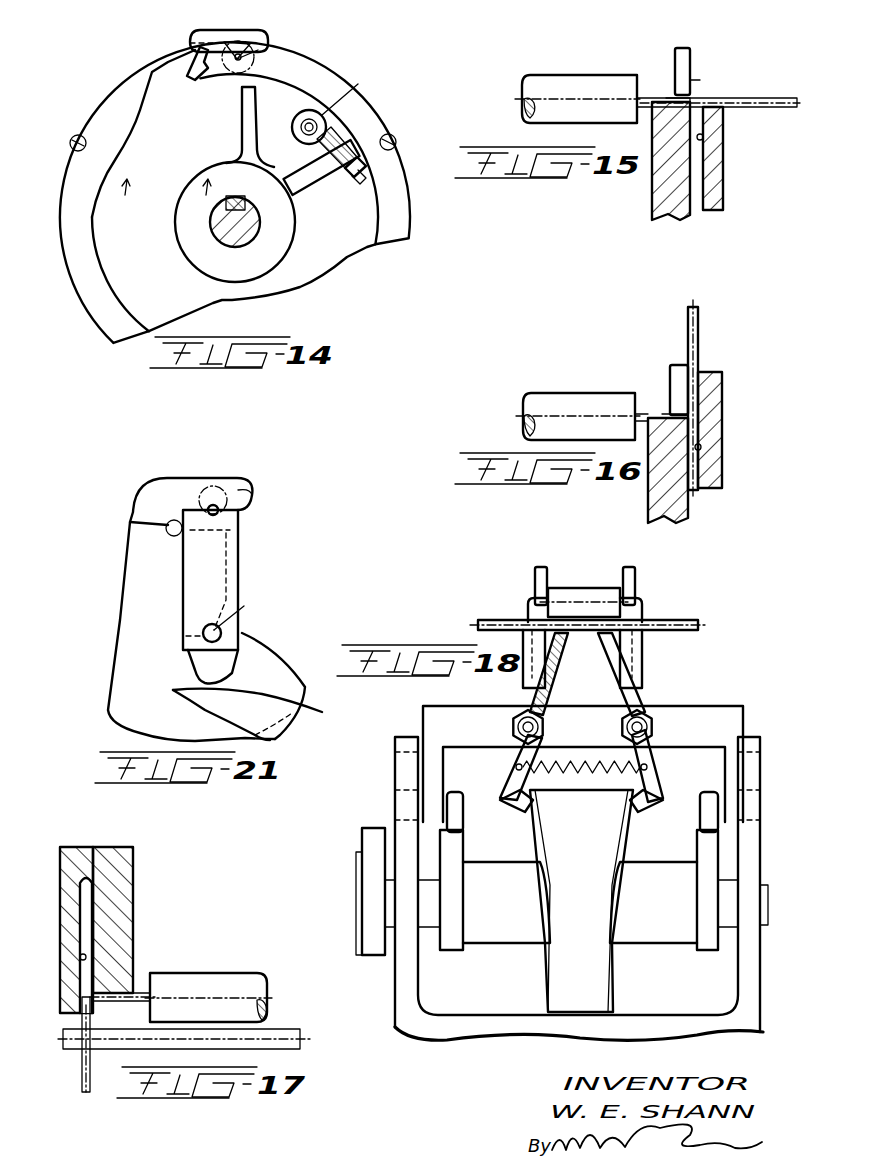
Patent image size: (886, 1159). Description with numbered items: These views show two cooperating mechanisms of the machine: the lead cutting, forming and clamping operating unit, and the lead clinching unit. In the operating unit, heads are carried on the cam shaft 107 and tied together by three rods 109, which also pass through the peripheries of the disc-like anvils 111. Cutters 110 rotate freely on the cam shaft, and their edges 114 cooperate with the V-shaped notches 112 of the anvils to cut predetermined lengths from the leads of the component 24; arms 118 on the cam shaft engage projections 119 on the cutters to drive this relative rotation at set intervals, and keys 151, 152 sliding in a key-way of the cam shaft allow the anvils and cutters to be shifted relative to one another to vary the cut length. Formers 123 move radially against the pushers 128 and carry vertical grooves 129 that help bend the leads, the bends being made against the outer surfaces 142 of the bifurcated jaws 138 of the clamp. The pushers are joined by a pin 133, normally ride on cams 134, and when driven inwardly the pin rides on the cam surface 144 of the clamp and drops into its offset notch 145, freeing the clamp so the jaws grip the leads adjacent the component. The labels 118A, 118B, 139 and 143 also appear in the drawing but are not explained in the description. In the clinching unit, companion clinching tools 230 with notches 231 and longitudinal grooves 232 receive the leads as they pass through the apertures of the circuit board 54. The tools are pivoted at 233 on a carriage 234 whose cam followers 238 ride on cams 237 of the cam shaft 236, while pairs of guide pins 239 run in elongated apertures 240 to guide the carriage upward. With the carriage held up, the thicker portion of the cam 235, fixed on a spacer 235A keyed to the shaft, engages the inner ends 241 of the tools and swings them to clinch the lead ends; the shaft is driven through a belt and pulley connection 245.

In FIG. 14, the component 24 is at (188, 40).
In FIG. 15, the component 24 is at (560, 82).
In FIG. 16, the component 24 is at (541, 400).
In FIG. 21, the component 24 is at (228, 500).
In FIG. 17, the component 24 is at (258, 984).
In FIG. 18, the component 24 is at (580, 590).
In FIG. 15, the circuit board 54 is at (718, 102).
In FIG. 17, the circuit board 54 is at (300, 1039).
In FIG. 18, the circuit board 54 is at (680, 626).
In FIG. 14, the cam shaft 107 is at (237, 218).
In FIG. 14, the rods 109 is at (70, 145).
In FIG. 14, the cutters 110 is at (107, 275).
In FIG. 14, the anvils 111 is at (124, 101).
In FIG. 14, the V-shaped notches 112 is at (246, 52).
In FIG. 14, the edges 114 is at (199, 80).
In FIG. 14, the arms 118 is at (240, 147).
In FIG. 14, the cam lever arm 118A is at (315, 195).
In FIG. 14, the cam lever eye 118B is at (320, 156).
In FIG. 14, the projections 119 is at (356, 91).
In FIG. 15, the formers 123 is at (722, 167).
In FIG. 16, the formers 123 is at (716, 418).
In FIG. 17, the formers 123 is at (72, 862).
In FIG. 15, the pushers 128 is at (655, 185).
In FIG. 16, the pushers 128 is at (650, 490).
In FIG. 21, the pushers 128 is at (240, 580).
In FIG. 17, the pushers 128 is at (128, 925).
In FIG. 18, the pushers 128 is at (535, 572).
In FIG. 15, the vertical grooves 129 is at (704, 137).
In FIG. 16, the vertical grooves 129 is at (702, 447).
In FIG. 17, the vertical grooves 129 is at (81, 960).
In FIG. 21, the pin 133 is at (221, 631).
In FIG. 21, the cams 134 is at (308, 717).
In FIG. 14, the jaws 138 is at (268, 40).
In FIG. 15, the jaws 138 is at (690, 68).
In FIG. 16, the jaws 138 is at (670, 372).
In FIG. 21, the jaws 138 is at (240, 480).
In FIG. 15, the connector 139 is at (672, 98).
In FIG. 16, the connector 139 is at (664, 413).
In FIG. 21, the connector 139 is at (207, 508).
In FIG. 17, the connector 139 is at (115, 1001).
In FIG. 21, the outer surfaces 142 is at (182, 478).
In FIG. 15, the bar 143 is at (700, 82).
In FIG. 16, the bar 143 is at (698, 366).
In FIG. 17, the bar 143 is at (86, 1044).
In FIG. 21, the cam surface 144 is at (252, 607).
In FIG. 21, the offset notch 145 is at (186, 636).
In FIG. 14, the key 151 is at (226, 202).
In FIG. 14, the key 152 is at (330, 160).
In FIG. 18, the clinching tools 230 is at (528, 680).
In FIG. 18, the notches 231 is at (598, 672).
In FIG. 18, the grooves 232 is at (618, 722).
In FIG. 18, the pivot 233 is at (620, 728).
In FIG. 18, the carriage 234 is at (430, 714).
In FIG. 18, the cam 235 is at (553, 968).
In FIG. 18, the spacer 235A is at (497, 876).
In FIG. 18, the cam shaft 236 is at (579, 888).
In FIG. 18, the cams 237 is at (452, 907).
In FIG. 18, the cam followers 238 is at (458, 794).
In FIG. 18, the guide pins 239 is at (395, 790).
In FIG. 18, the elongated apertures 240 is at (395, 820).
In FIG. 18, the inner ends 241 is at (630, 803).
In FIG. 18, the belt and pulley connection 245 is at (365, 836).